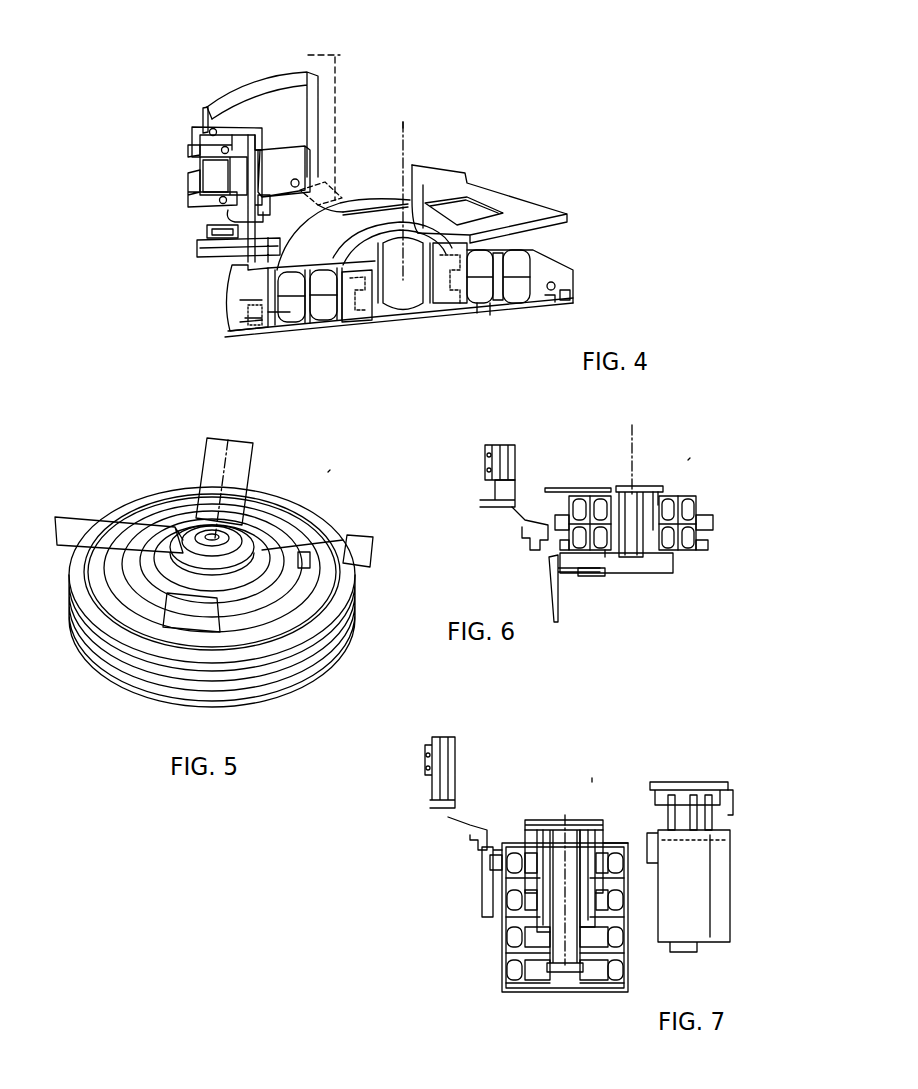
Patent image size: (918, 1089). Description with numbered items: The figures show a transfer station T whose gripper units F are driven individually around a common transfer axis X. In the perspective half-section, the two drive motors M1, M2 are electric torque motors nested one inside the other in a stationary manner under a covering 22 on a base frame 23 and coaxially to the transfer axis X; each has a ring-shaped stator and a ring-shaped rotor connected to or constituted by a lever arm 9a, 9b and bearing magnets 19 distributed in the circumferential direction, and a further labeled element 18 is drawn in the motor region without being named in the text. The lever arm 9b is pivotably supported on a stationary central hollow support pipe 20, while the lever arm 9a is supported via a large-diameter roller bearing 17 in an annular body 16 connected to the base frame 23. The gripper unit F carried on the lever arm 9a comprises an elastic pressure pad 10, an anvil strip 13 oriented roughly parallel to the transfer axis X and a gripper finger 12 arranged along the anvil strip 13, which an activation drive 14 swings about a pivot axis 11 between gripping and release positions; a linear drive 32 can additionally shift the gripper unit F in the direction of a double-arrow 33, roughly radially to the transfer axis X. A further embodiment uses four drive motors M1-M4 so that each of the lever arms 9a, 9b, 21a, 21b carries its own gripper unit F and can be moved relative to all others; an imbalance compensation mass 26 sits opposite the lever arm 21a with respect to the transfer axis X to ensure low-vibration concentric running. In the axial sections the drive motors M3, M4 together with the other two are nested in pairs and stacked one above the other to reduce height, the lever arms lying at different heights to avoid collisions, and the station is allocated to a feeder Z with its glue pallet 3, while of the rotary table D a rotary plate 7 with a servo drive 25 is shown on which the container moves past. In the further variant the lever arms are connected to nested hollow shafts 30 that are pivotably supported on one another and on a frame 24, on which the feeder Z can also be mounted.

In FIG. 6, the glue pallet 3 is at (515, 460).
In FIG. 7, the glue pallet 3 is at (455, 750).
In FIG. 7, the rotary plate 7 is at (682, 782).
In FIG. 4, the lever arm 9a is at (320, 190).
In FIG. 5, the lever arm 9a is at (210, 460).
In FIG. 6, the lever arm 9a is at (652, 485).
In FIG. 7, the lever arm 9a is at (575, 830).
In FIG. 4, the lever arm 9b is at (480, 195).
In FIG. 5, the lever arm 9b is at (178, 618).
In FIG. 6, the lever arm 9b is at (692, 497).
In FIG. 7, the lever arm 9b is at (622, 850).
In FIG. 4, the elastic pressure pad 10 is at (238, 92).
In FIG. 4, the pivot axis 11 is at (230, 128).
In FIG. 4, the gripper finger 12 is at (190, 140).
In FIG. 4, the anvil strip 13 is at (204, 107).
In FIG. 4, the activation drive 14 is at (300, 155).
In FIG. 4, the annular body 16 is at (228, 303).
In FIG. 4, the large-diameter roller bearing 17 is at (256, 338).
In FIG. 4, the bearing 18 is at (285, 322).
In FIG. 4, the magnets 19 is at (278, 262).
In FIG. 4, the support pipe 20 is at (440, 185).
In FIG. 5, the lever arm 21a is at (75, 522).
In FIG. 6, the lever arm 21a is at (555, 488).
In FIG. 7, the lever arm 21a is at (590, 830).
In FIG. 5, the lever arm 21b is at (358, 538).
In FIG. 6, the lever arm 21b is at (710, 515).
In FIG. 7, the lever arm 21b is at (605, 835).
In FIG. 4, the covering 22 is at (355, 214).
In FIG. 4, the base frame 23 is at (490, 316).
In FIG. 6, the base frame 23 is at (688, 556).
In FIG. 6, the frame 24 is at (567, 597).
In FIG. 7, the frame 24 is at (495, 847).
In FIG. 7, the servo drive 25 is at (662, 920).
In FIG. 5, the imbalance compensation mass 26 is at (308, 552).
In FIG. 4, the hollow shafts 30 is at (320, 228).
In FIG. 4, the linear drive 32 is at (207, 257).
In FIG. 4, the double-arrow 33 is at (228, 212).
In FIG. 7, the rotary table D is at (730, 790).
In FIG. 4, the gripper unit F is at (340, 55).
In FIG. 4, the drive motor M1 is at (295, 340).
In FIG. 6, the drive motor M1 is at (585, 548).
In FIG. 7, the drive motor M1 is at (507, 972).
In FIG. 4, the drive motor M2 is at (328, 340).
In FIG. 6, the drive motor M2 is at (608, 548).
In FIG. 7, the drive motor M2 is at (507, 940).
In FIG. 6, the drive motor M3 is at (585, 500).
In FIG. 7, the drive motor M3 is at (615, 902).
In FIG. 6, the drive motor M4 is at (605, 500).
In FIG. 7, the drive motor M4 is at (618, 855).
In FIG. 5, the drive motors M1-M4 is at (98, 690).
In FIG. 4, the transfer station T is at (397, 115).
In FIG. 5, the transfer station T is at (328, 470).
In FIG. 6, the transfer station T is at (690, 458).
In FIG. 7, the transfer station T is at (592, 778).
In FIG. 4, the transfer axis X is at (403, 148).
In FIG. 5, the transfer axis X is at (240, 470).
In FIG. 6, the transfer axis X is at (636, 434).
In FIG. 6, the feeder Z is at (530, 505).
In FIG. 7, the feeder Z is at (480, 820).